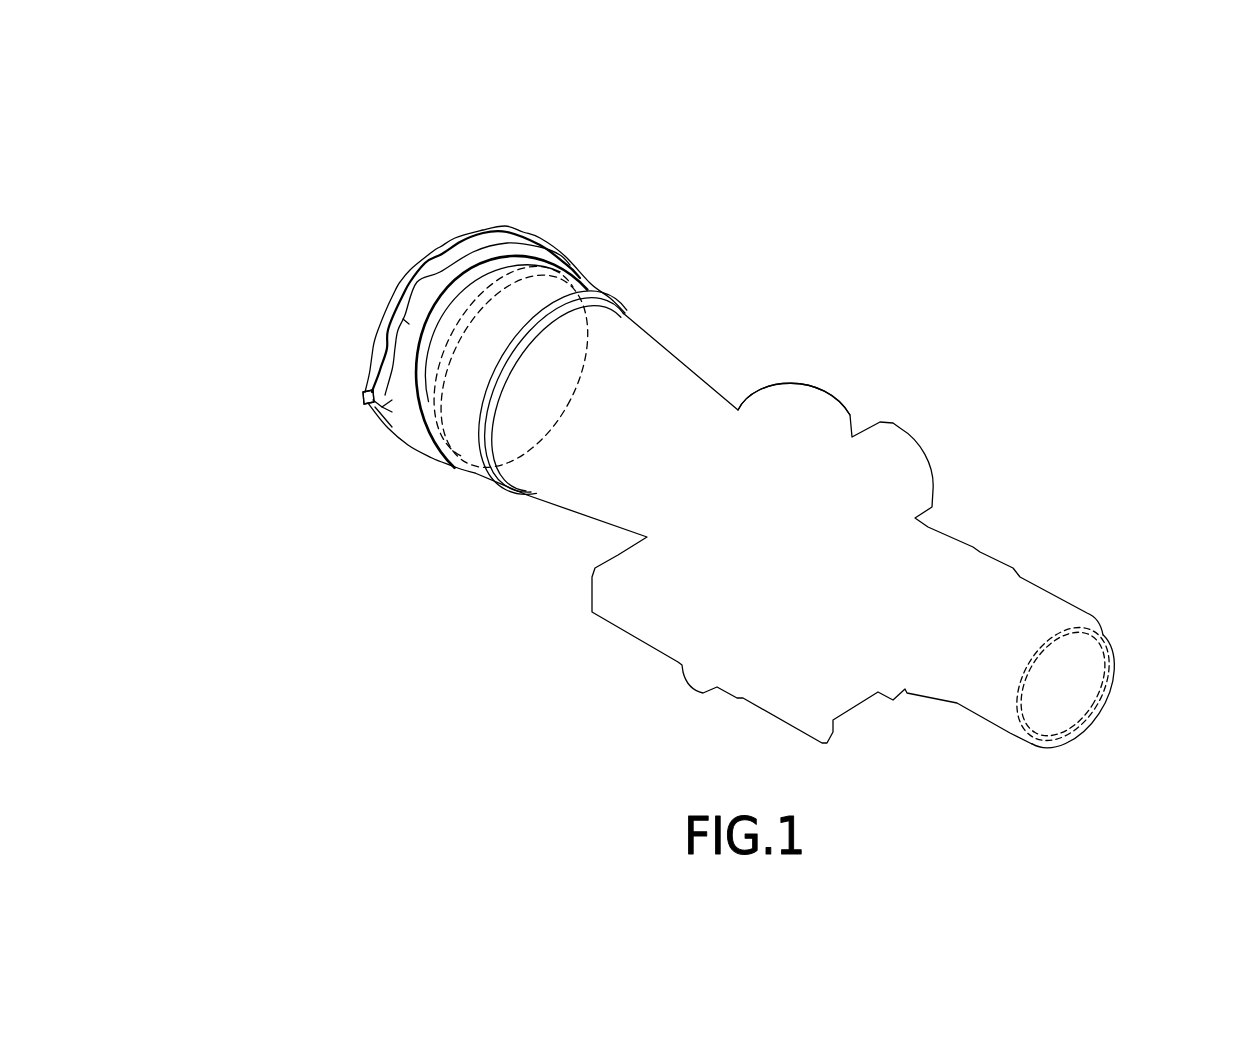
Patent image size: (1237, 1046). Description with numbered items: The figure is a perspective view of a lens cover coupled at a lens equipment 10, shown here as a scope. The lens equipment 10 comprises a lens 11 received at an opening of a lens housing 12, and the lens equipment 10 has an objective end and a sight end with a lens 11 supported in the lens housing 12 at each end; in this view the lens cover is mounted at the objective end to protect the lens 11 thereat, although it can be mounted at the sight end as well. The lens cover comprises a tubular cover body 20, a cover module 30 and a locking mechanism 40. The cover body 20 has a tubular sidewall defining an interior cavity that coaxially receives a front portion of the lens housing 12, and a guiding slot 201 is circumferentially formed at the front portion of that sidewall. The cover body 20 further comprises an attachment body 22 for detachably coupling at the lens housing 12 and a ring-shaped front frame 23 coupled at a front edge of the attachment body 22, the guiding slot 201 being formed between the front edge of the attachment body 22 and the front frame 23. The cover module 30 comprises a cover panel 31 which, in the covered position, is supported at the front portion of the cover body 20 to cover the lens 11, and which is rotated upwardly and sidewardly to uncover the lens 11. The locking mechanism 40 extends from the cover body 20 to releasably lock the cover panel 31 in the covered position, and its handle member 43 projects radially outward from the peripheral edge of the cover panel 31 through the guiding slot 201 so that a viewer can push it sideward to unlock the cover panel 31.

The lens equipment 10 is at (820, 290).
The lens 11 is at (585, 353).
The lens housing 12 is at (787, 410).
The tubular cover body 20 is at (447, 597).
The guiding slot 201 is at (477, 238).
The attachment body 22 is at (473, 477).
The ring-shaped front frame 23 is at (383, 433).
The cover module 30 is at (273, 205).
The cover panel 31 is at (423, 290).
The locking mechanism 40 is at (238, 487).
The handle member 43 is at (370, 400).